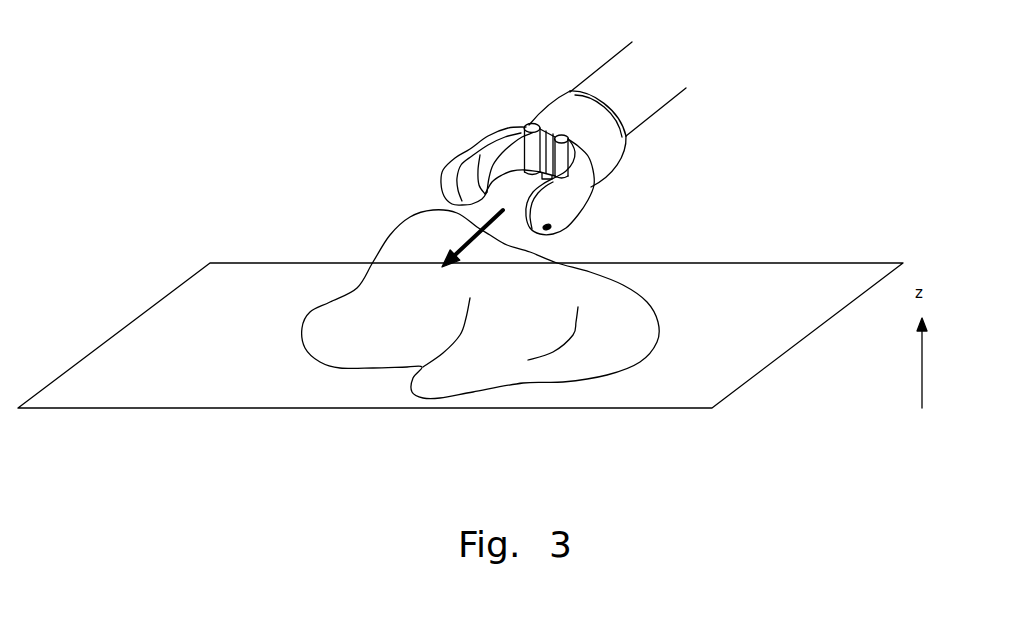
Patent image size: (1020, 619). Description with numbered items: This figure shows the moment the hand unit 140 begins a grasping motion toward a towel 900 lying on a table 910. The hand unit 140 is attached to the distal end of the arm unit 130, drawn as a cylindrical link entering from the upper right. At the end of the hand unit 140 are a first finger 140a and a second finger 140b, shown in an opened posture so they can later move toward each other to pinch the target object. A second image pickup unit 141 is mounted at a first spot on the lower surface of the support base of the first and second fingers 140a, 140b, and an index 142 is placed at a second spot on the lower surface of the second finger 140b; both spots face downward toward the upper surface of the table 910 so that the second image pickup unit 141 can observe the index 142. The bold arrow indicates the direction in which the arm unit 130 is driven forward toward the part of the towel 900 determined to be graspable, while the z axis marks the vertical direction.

The arm unit 130 is at (620, 70).
The hand unit 140 is at (560, 108).
The first finger 140a is at (457, 155).
The second finger 140b is at (577, 200).
The second image pickup unit 141 is at (515, 172).
The index 142 is at (556, 232).
The towel 900 is at (310, 340).
The table 910 is at (785, 275).